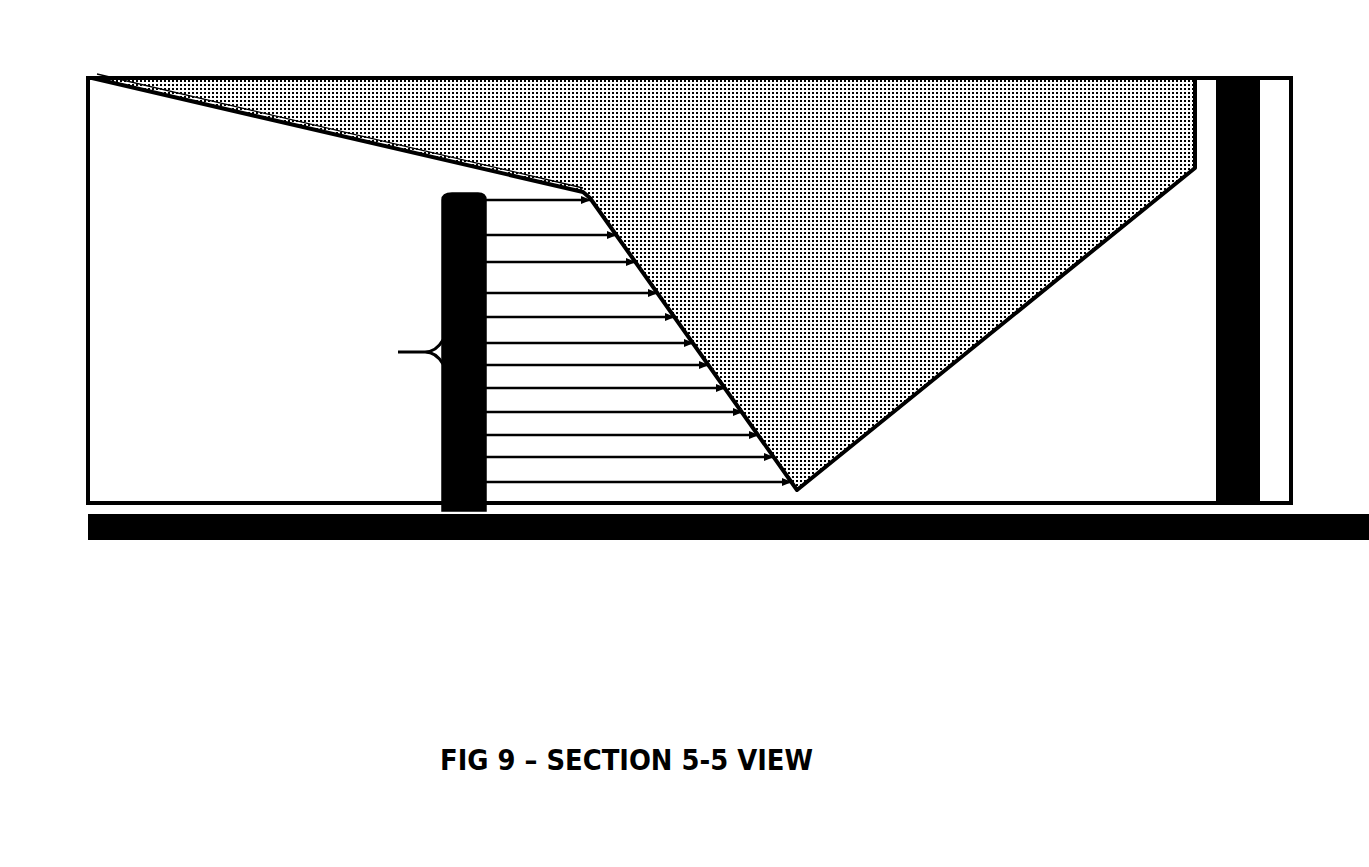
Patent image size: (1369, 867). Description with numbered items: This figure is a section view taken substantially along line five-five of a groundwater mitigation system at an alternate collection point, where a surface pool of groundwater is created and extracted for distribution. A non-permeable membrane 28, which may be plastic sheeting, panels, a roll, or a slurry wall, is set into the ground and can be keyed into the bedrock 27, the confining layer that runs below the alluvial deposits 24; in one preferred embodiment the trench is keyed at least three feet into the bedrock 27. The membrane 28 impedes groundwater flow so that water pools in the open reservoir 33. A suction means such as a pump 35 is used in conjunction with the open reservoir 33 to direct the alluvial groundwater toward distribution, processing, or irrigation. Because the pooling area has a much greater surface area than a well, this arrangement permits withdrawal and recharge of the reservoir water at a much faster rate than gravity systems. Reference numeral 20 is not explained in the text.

The cavity wall / channel surface 20 is at (162, 124).
The alluvial deposits 24 is at (555, 352).
The bedrock 27 is at (145, 540).
The non-permeable membrane 28 is at (1236, 131).
The open reservoir 33 is at (482, 100).
The pump 35 is at (840, 98).